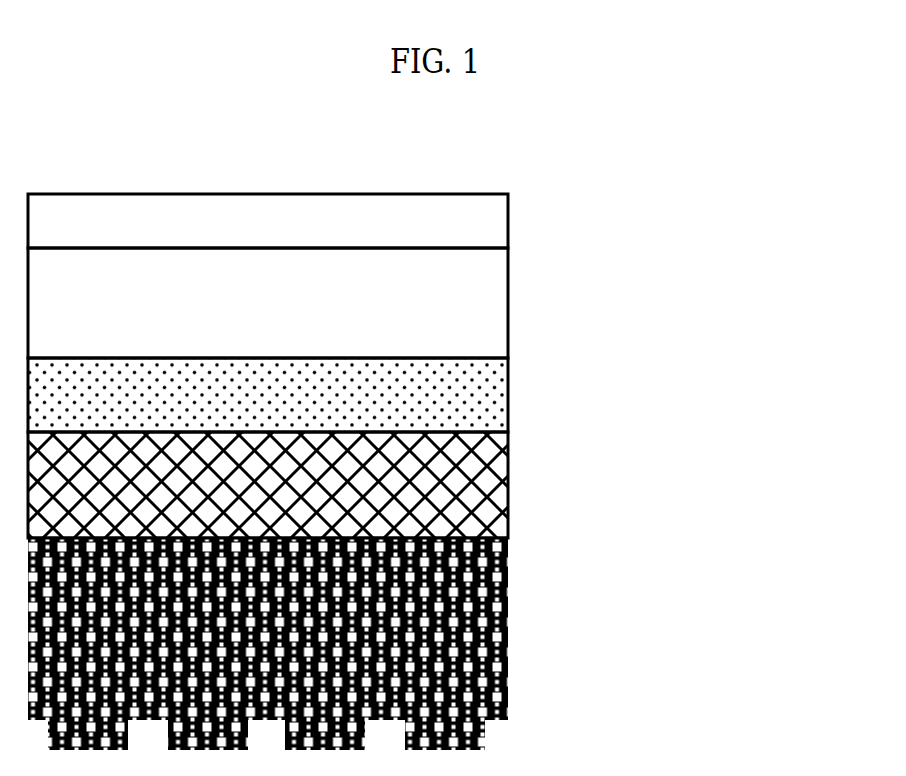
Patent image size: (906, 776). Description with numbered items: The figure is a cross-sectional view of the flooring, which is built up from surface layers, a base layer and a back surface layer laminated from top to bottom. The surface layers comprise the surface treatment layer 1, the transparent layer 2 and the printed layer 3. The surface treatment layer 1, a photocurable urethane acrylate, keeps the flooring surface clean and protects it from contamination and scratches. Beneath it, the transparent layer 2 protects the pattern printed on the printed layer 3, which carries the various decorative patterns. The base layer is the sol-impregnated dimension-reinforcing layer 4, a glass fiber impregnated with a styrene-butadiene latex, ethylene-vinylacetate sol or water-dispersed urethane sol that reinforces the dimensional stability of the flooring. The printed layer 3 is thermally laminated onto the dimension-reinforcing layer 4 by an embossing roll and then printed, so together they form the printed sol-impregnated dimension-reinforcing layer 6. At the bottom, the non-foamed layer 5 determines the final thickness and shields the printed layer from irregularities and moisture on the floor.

The surface treatment layer 1 is at (542, 217).
The transparent layer 2 is at (542, 305).
The printed layer 3 is at (542, 386).
The sol-impregnated dimension-reinforcing layer 4 is at (542, 487).
The non-foamed layer 5 is at (542, 630).
The printed sol-impregnated dimension-reinforcing layer 6 is at (443, 447).